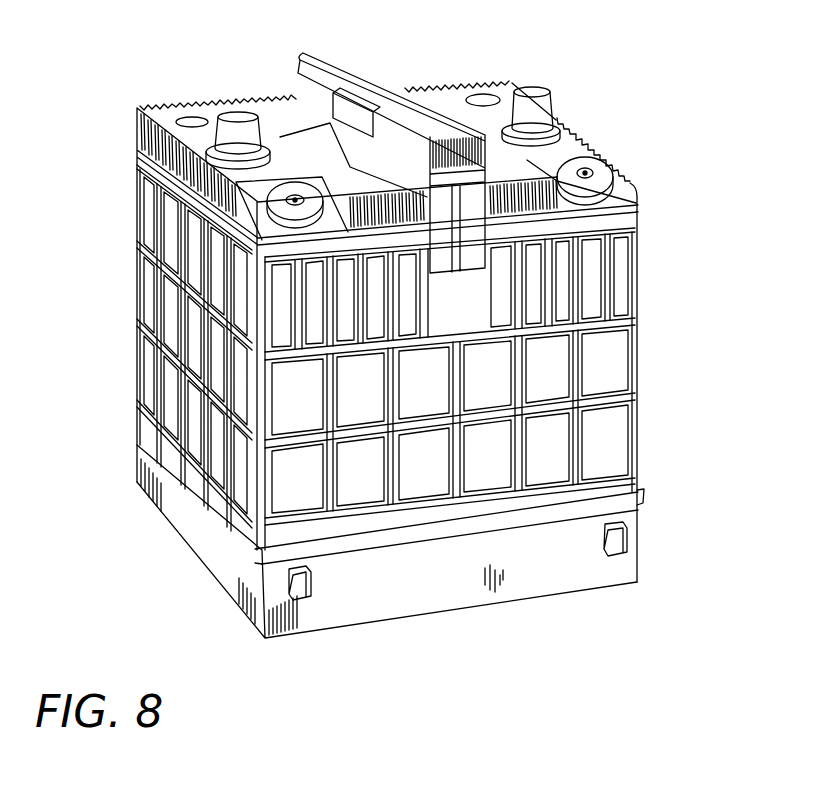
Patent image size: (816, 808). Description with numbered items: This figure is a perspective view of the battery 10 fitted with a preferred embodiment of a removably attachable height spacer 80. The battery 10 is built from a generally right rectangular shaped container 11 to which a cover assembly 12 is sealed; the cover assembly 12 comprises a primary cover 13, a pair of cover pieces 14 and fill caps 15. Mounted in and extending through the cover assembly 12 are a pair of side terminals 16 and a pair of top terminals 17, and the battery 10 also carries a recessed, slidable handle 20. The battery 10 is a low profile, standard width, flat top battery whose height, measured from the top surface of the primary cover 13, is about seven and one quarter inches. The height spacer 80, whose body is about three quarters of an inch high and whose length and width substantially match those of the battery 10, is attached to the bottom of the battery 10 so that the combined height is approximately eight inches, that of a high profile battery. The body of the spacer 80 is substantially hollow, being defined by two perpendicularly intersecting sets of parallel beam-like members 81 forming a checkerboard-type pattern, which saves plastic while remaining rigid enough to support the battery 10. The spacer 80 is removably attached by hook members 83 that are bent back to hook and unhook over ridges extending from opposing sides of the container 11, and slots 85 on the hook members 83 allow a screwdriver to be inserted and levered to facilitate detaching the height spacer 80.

The battery 10 is at (658, 245).
The container 11 is at (622, 365).
The cover assembly 12 is at (582, 142).
The primary cover 13 is at (503, 110).
The cover pieces 14 is at (427, 84).
The fill caps 15 is at (487, 98).
The side terminals 16 is at (598, 172).
The top terminals 17 is at (540, 90).
The handle 20 is at (347, 62).
The height spacer 80 is at (518, 604).
The beam-like members 81 is at (565, 588).
The hook members 83 is at (643, 500).
The slots 85 is at (623, 547).